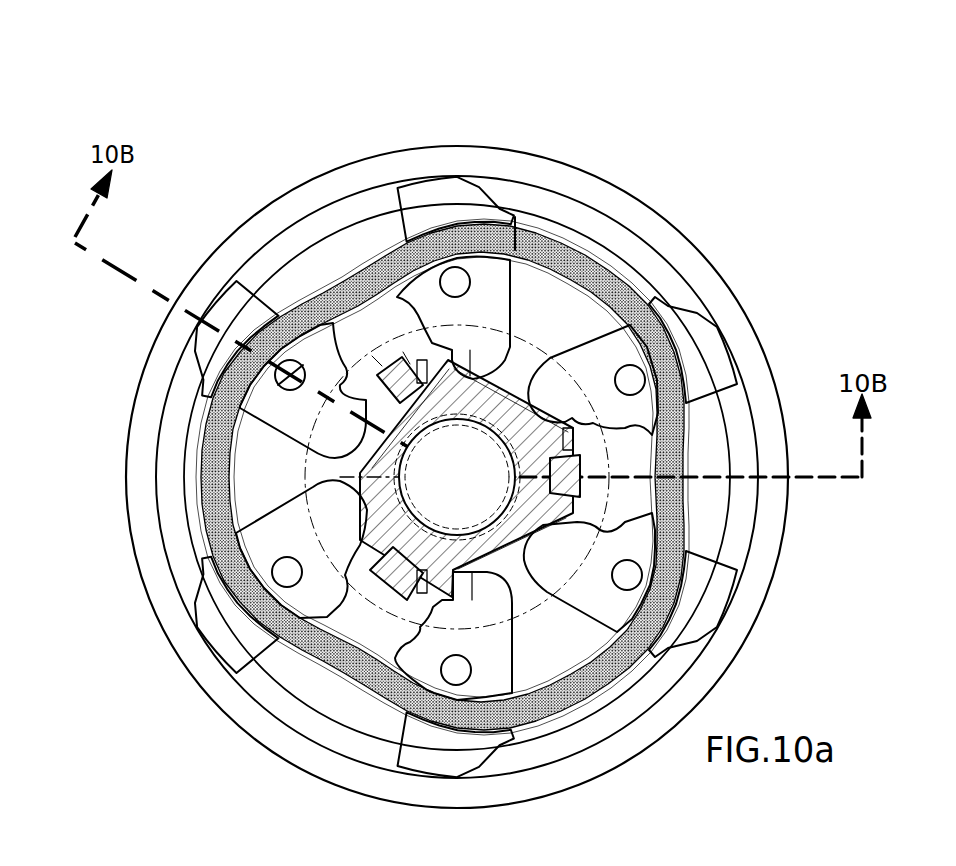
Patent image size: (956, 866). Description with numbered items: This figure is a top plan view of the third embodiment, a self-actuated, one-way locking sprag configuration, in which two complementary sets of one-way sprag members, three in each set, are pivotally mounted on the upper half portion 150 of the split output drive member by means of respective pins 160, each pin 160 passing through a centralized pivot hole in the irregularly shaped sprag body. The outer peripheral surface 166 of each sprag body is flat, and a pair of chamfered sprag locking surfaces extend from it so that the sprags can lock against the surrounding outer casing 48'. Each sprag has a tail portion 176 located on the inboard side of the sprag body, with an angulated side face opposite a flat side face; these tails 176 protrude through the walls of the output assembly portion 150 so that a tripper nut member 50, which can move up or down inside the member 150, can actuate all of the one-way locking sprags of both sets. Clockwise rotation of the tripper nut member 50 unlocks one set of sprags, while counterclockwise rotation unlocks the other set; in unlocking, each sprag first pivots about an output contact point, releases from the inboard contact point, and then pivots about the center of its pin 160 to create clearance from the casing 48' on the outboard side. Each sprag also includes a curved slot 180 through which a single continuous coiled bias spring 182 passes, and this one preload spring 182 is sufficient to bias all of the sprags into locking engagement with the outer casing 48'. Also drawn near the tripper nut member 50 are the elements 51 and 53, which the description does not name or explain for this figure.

The casing 48' is at (512, 456).
The tripper nut member 50 is at (548, 400).
The seal strip 51 is at (363, 400).
The vane 53 is at (390, 362).
The upper half portion of the output drive member 150 is at (378, 360).
The pin 160 is at (280, 365).
The outer peripheral surface 166 is at (468, 180).
The tail portion 176 is at (486, 350).
The curved slot 180 is at (518, 214).
The coiled bias spring 182 is at (407, 357).